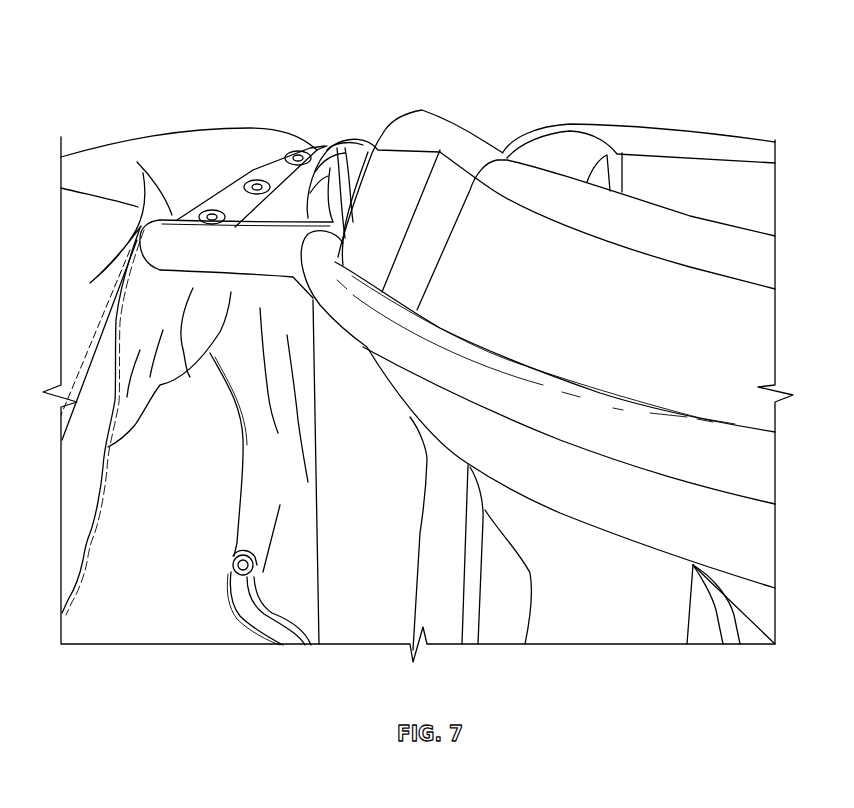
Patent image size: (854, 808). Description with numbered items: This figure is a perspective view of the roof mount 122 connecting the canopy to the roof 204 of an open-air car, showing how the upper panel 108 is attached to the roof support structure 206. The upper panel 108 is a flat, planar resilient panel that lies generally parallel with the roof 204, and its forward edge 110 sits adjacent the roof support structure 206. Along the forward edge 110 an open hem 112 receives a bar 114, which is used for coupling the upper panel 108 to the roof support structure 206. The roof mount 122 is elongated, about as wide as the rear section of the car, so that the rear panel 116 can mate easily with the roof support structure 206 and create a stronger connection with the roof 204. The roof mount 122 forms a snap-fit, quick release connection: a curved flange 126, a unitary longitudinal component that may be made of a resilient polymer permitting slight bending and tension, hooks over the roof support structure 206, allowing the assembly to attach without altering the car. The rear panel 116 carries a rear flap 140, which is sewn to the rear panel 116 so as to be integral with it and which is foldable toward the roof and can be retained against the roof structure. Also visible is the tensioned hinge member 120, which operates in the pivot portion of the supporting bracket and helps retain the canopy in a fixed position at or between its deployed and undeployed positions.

The upper panel 108 is at (206, 174).
The forward edge 110 is at (281, 135).
The open hem 112 is at (313, 135).
The bar 114 is at (253, 168).
The rear panel 116 is at (291, 471).
The tensioned hinge member 120 is at (235, 560).
The roof mount 122 is at (317, 150).
The curved flange 126 is at (334, 265).
The rear flap 140 is at (306, 586).
The roof 204 is at (620, 137).
The roof support structure 206 is at (407, 137).